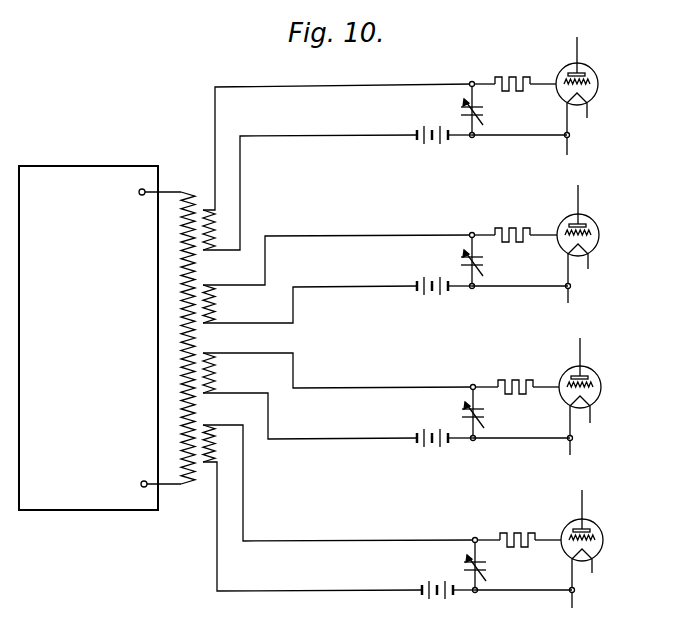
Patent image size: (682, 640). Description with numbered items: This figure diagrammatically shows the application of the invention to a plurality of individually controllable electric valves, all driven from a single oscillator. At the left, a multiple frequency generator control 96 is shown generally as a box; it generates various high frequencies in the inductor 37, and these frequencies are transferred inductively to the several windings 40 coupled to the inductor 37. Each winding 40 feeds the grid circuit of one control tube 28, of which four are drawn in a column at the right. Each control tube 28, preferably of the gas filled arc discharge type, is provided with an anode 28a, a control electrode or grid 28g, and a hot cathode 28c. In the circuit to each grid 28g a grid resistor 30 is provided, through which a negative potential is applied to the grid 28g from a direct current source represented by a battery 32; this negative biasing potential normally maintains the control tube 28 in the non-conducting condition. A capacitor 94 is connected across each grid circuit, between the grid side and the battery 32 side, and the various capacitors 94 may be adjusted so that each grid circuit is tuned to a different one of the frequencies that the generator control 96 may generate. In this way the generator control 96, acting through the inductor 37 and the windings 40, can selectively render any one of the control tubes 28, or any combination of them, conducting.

The multiple frequency generator control 96 is at (98, 138).
The inductor 37 is at (200, 268).
The windings 40 is at (209, 232).
The grid resistor 30 is at (516, 78).
The control tube 28 is at (597, 314).
The anode 28a is at (572, 65).
The control electrode or grid 28g is at (598, 83).
The hot cathode 28c is at (588, 97).
The capacitor 94 is at (485, 108).
The battery 32 is at (430, 143).